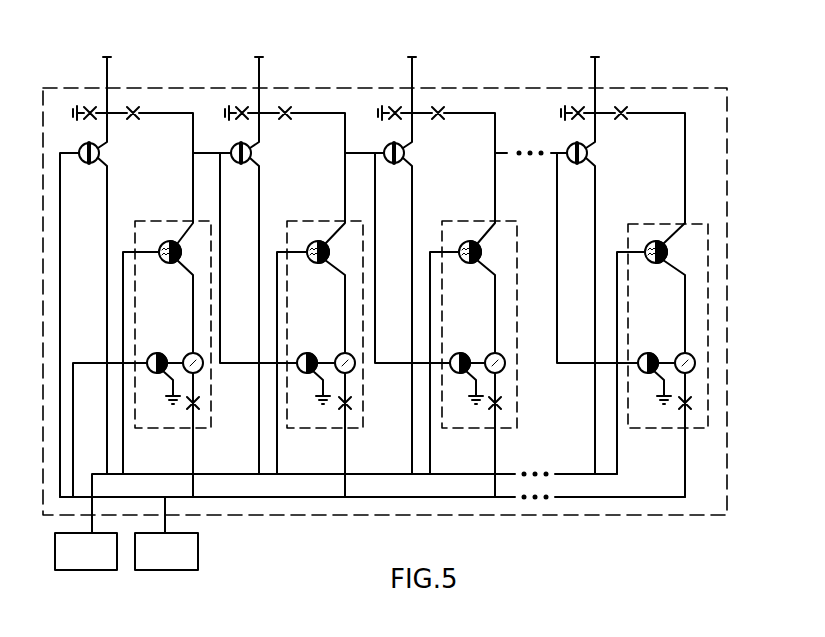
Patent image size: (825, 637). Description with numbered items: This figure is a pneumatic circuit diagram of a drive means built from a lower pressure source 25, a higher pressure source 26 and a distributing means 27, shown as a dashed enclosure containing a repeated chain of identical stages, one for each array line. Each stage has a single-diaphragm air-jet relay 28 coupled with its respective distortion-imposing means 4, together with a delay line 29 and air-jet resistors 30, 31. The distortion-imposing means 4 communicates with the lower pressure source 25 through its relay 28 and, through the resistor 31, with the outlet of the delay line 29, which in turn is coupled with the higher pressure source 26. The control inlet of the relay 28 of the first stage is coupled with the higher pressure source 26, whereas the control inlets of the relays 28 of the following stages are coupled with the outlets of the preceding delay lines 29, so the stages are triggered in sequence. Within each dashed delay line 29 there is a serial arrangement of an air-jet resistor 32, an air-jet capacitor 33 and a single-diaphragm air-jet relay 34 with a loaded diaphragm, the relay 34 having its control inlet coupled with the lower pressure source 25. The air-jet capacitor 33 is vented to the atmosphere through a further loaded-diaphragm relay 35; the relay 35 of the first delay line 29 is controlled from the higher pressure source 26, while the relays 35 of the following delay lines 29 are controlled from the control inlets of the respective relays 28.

The distortion-imposing means 4 is at (107, 75).
The lower pressure source 25 is at (86, 551).
The higher pressure source 26 is at (166, 551).
The distributing means 27 is at (728, 190).
The single-diaphragm air-jet relay 28 is at (97, 158).
The delay line 29 is at (149, 221).
The air-jet resistor 30 is at (90, 106).
The air-jet resistor 31 is at (135, 106).
The air-jet resistor 32 is at (189, 410).
The air-jet capacitor 33 is at (190, 353).
The single-diaphragm air-jet relay with loaded diaphragm 34 is at (168, 263).
The single-diaphragm air-jet relay with loaded diaphragm 35 is at (155, 353).